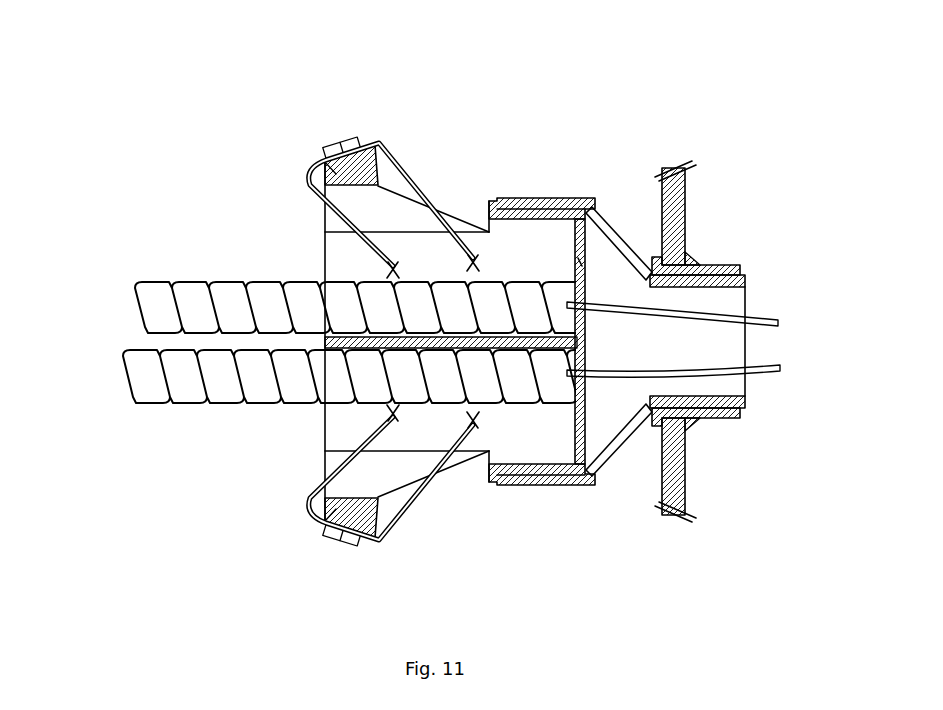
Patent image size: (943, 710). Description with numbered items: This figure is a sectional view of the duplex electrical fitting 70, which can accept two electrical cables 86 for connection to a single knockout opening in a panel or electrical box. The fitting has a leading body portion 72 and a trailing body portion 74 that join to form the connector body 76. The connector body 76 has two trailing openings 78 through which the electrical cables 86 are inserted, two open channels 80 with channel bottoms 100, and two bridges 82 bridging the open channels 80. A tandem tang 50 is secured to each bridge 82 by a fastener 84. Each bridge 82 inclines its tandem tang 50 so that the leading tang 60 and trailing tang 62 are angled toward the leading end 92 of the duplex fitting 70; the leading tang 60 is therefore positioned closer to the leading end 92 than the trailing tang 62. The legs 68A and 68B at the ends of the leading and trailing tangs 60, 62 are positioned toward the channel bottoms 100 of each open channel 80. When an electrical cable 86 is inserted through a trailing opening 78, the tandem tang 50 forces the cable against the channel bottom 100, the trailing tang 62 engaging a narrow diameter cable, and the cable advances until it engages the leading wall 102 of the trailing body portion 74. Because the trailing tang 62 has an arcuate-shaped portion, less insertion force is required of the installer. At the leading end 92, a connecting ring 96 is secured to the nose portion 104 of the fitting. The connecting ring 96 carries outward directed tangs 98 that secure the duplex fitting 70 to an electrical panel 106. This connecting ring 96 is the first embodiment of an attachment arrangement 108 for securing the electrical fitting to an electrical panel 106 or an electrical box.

The tandem tang 50 is at (372, 141).
The leading tang 60 is at (416, 166).
The trailing tang 62 is at (341, 220).
The leg 68A is at (480, 262).
The leg 68B is at (470, 262).
The duplex electrical fitting 70 is at (218, 196).
The leading body portion 72 is at (672, 512).
The trailing body portion 74 is at (538, 474).
The connector body 76 is at (543, 198).
The trailing opening 78 is at (334, 270).
The open channel 80 is at (491, 200).
The bridge 82 is at (334, 173).
The fastener 84 is at (341, 137).
The electrical cable 86 is at (192, 283).
The leading end 92 is at (746, 305).
The connecting ring 96 is at (720, 420).
The outward directed tang 98 is at (690, 431).
The channel bottom 100 is at (505, 289).
The leading wall 102 is at (582, 266).
The nose portion 104 is at (718, 395).
The electrical panel 106 is at (673, 203).
The attachment arrangement 108 is at (712, 256).